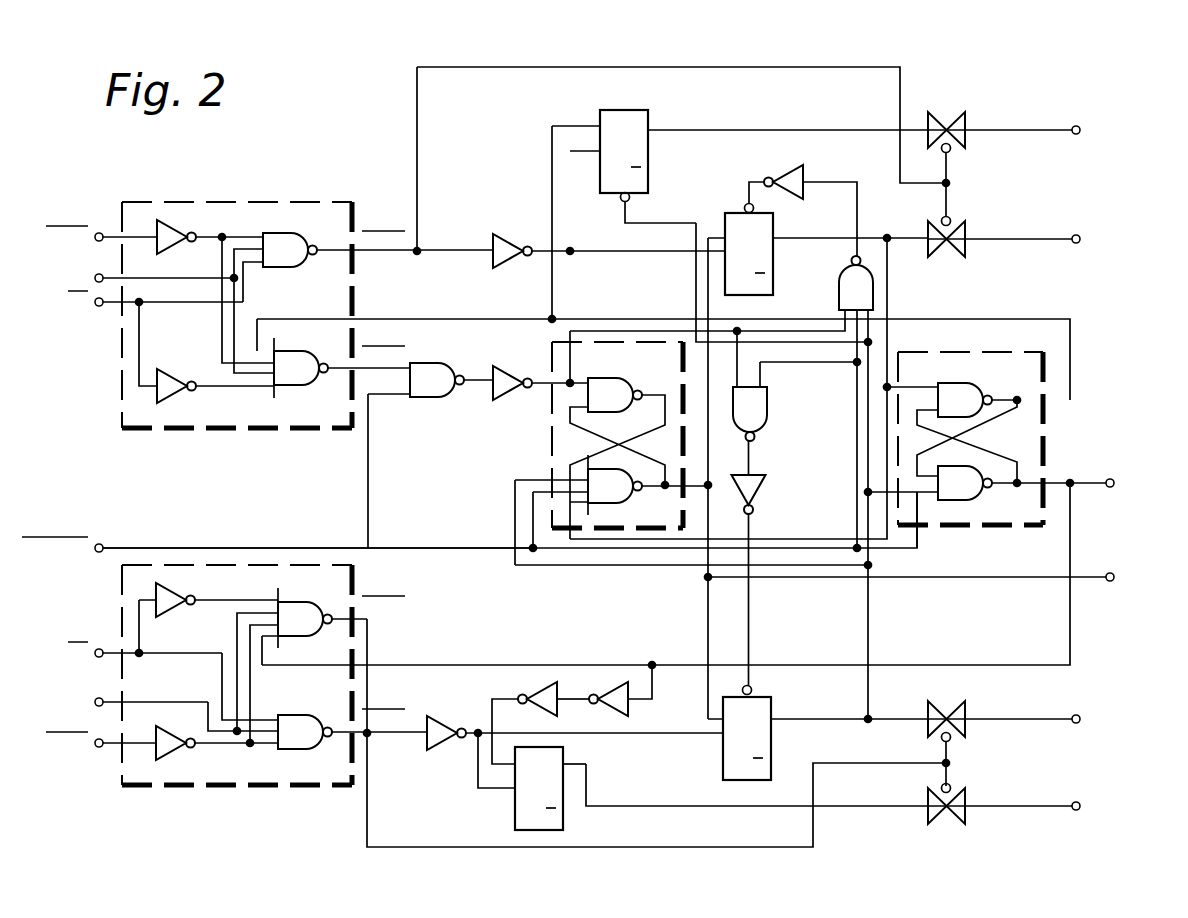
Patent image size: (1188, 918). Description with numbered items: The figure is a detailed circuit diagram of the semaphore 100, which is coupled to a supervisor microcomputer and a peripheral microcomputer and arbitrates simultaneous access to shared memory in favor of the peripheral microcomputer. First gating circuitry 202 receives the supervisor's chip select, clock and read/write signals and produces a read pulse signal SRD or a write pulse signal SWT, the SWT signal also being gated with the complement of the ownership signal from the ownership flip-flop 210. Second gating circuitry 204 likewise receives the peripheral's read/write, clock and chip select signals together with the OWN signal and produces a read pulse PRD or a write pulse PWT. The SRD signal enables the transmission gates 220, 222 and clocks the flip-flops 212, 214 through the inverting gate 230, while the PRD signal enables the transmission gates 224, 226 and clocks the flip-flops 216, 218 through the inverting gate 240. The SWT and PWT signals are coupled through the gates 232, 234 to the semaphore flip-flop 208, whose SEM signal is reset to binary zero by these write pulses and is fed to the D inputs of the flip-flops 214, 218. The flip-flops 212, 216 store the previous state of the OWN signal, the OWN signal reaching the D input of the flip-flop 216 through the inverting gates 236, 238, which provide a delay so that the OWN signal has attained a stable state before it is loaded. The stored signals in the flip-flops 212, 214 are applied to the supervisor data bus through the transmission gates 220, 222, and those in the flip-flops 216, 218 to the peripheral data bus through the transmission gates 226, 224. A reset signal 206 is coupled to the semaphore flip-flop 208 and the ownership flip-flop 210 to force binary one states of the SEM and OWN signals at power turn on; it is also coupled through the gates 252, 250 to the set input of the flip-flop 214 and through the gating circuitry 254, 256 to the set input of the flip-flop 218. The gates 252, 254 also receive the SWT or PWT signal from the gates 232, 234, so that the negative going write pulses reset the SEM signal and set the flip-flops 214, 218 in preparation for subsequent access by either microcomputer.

The semaphore 100 is at (356, 137).
The first gating circuitry 202 is at (253, 203).
The second gating circuitry 204 is at (149, 785).
The reset signal 206 is at (183, 547).
The semaphore flip-flop 208 is at (552, 440).
The ownership flip-flop 210 is at (1044, 460).
The flip-flop 212 is at (643, 108).
The flip-flop 214 is at (773, 220).
The flip-flop 216 is at (515, 814).
The flip-flop 218 is at (723, 756).
The transmission gate 220 is at (970, 114).
The transmission gate 222 is at (970, 224).
The transmission gate 224 is at (967, 706).
The transmission gate 226 is at (967, 793).
The inverting gate 230 is at (503, 235).
The gate 232 is at (423, 398).
The gate 234 is at (508, 400).
The inverting gate 236 is at (548, 714).
The inverting gate 238 is at (608, 714).
The inverting gate 240 is at (442, 716).
The gate 250 is at (793, 168).
The gate 252 is at (840, 276).
The gating circuitry 254 is at (767, 404).
The gating circuitry 256 is at (762, 486).